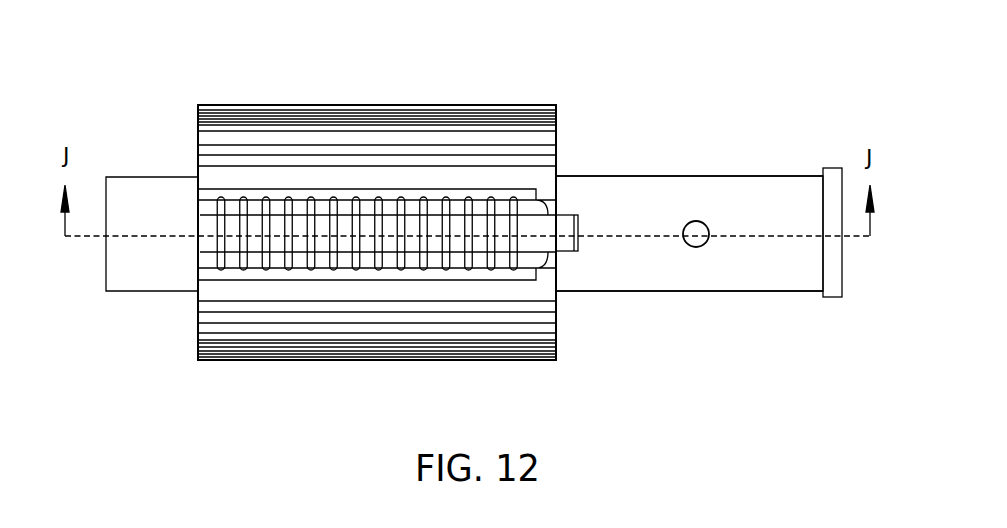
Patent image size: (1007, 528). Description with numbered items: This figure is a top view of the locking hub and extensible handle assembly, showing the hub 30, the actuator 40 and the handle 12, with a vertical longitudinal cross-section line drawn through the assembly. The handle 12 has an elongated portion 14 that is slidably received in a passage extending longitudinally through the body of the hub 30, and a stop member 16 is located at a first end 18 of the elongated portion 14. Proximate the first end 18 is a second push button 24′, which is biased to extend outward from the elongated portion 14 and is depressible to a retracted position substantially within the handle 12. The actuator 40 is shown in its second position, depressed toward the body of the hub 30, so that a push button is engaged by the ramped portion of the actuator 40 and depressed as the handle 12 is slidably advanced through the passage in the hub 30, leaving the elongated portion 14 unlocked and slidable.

The handle 12 is at (617, 170).
The elongated portion 14 is at (161, 192).
The stop member 16 is at (831, 178).
The first end 18 is at (800, 202).
The second push button 24′ is at (696, 223).
The hub 30 is at (412, 100).
The actuator 40 is at (343, 192).